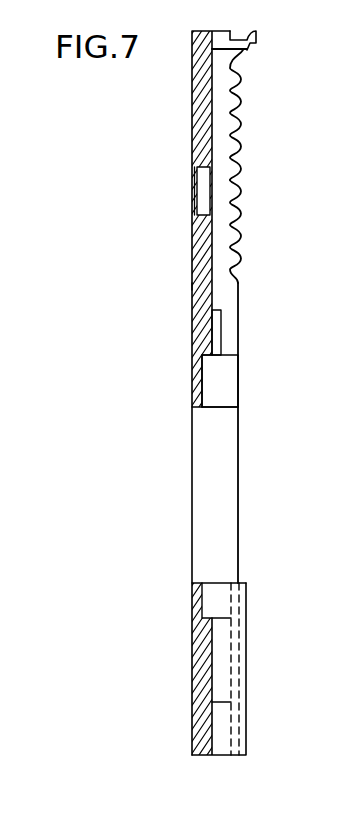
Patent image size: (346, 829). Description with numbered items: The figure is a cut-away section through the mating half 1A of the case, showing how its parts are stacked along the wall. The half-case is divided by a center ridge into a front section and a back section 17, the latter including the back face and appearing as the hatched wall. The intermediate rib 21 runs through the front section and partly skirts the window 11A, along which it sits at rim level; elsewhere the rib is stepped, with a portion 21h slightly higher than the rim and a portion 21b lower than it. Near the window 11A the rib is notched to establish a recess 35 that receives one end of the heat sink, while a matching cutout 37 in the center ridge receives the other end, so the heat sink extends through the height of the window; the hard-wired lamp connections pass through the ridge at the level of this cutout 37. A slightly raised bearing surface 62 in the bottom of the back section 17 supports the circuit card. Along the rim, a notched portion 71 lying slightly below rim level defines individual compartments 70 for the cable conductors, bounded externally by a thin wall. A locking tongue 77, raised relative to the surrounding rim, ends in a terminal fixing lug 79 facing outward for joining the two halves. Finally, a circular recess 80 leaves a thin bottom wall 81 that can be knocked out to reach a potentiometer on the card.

The mating half 1A is at (188, 277).
The window 11A is at (203, 472).
The back section 17 is at (212, 232).
The intermediate rib 21 is at (248, 503).
The higher portion of intermediate rib 21h is at (247, 657).
The lower portion of intermediate rib 21b is at (232, 668).
The recess 35 is at (203, 597).
The cutout 37 is at (215, 368).
The bearing surface 62 is at (222, 325).
The compartment 70 is at (232, 103).
The notched portion 71 is at (243, 149).
The locking tongue 77 is at (258, 48).
The terminal fixing lug 79 is at (247, 37).
The circular recess 80 is at (204, 186).
The thin bottom wall 81 is at (196, 190).